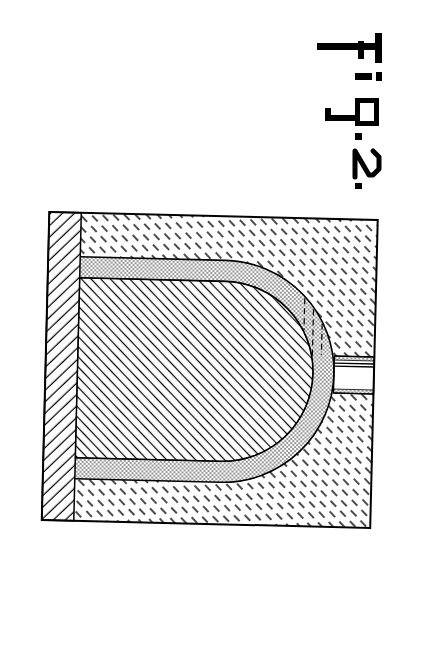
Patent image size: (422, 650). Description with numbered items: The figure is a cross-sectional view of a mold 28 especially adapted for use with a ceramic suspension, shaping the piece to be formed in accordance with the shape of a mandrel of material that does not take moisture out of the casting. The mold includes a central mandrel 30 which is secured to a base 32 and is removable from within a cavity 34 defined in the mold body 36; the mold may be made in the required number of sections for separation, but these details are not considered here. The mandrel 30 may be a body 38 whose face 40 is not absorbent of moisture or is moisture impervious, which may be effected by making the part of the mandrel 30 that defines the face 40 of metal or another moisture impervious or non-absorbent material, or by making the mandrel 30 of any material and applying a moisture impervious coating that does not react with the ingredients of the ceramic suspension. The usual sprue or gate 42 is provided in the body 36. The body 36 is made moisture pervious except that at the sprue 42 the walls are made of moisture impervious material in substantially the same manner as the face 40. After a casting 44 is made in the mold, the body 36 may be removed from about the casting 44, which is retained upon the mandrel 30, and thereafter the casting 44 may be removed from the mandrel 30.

The mold 28 is at (305, 525).
The central mandrel 30 is at (87, 363).
The base 32 is at (55, 508).
The cavity 34 is at (225, 484).
The mold body 36 is at (343, 522).
The body 38 is at (192, 357).
The face 40 is at (199, 275).
The sprue or gate 42 is at (368, 375).
The casting 44 is at (172, 472).